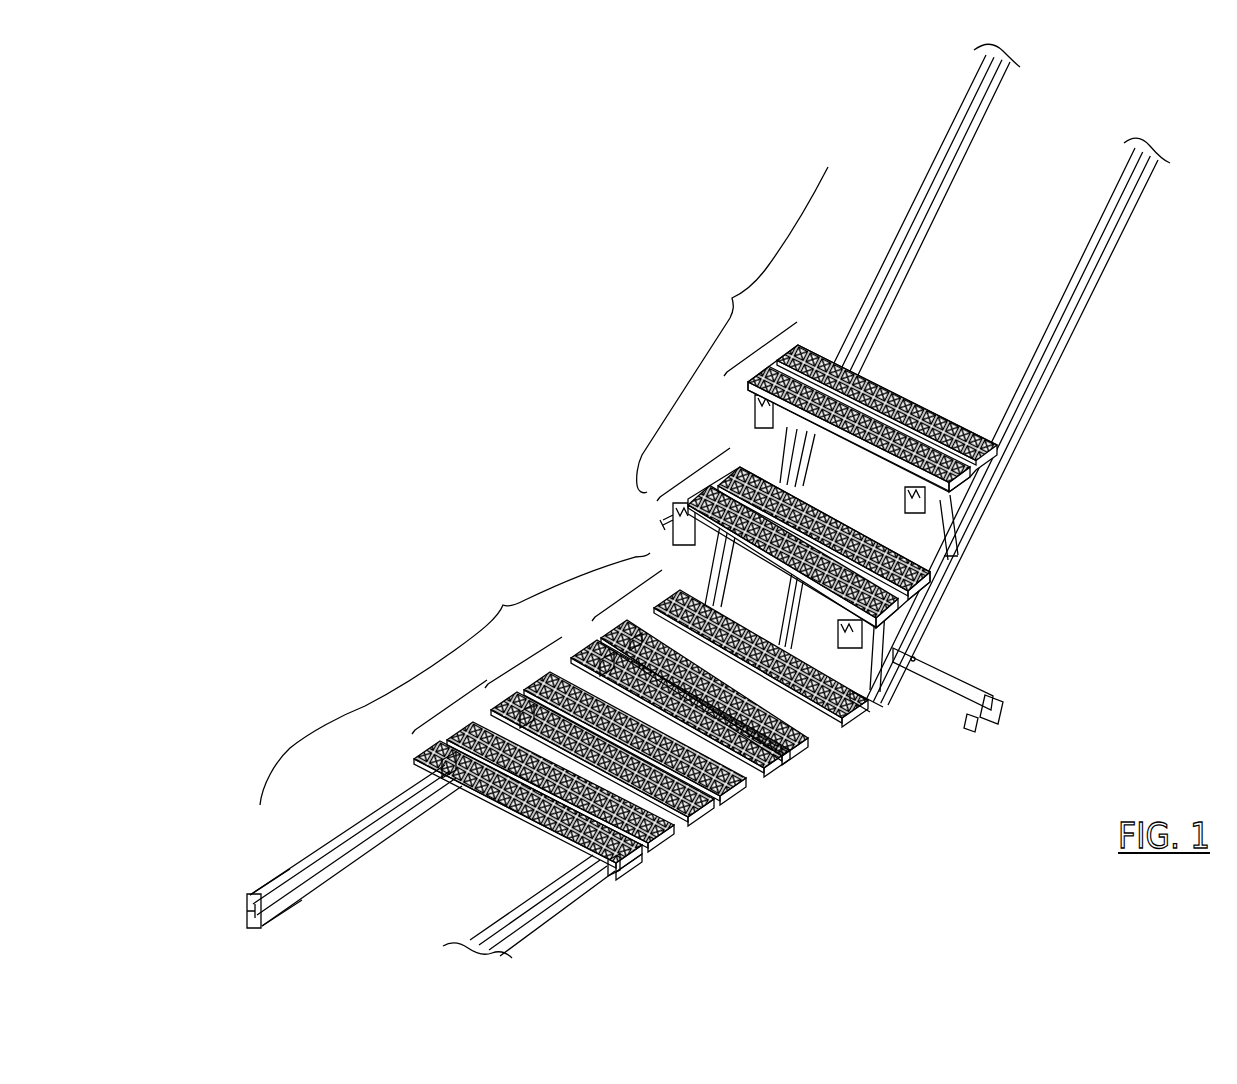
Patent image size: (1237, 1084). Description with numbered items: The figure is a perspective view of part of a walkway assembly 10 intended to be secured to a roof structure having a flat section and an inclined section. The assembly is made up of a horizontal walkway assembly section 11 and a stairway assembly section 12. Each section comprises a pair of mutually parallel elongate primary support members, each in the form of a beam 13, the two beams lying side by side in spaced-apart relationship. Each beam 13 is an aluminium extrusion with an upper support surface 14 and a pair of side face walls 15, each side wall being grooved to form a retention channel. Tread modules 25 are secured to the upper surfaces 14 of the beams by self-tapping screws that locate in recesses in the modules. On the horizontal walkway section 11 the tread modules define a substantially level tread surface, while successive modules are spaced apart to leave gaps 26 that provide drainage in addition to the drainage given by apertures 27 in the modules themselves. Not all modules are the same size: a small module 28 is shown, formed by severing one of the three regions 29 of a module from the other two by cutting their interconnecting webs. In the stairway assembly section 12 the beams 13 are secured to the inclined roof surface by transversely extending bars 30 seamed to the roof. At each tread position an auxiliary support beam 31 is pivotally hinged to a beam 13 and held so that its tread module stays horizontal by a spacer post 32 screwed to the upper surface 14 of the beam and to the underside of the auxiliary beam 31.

The walkway assembly 10 is at (523, 388).
The horizontal walkway assembly section 11 is at (503, 605).
The stairway assembly section 12 is at (731, 297).
The beam 13 is at (936, 242).
The upper support surface 14 is at (280, 886).
The side face wall 15 is at (252, 908).
The tread module 25 is at (604, 521).
The gap 26 is at (790, 752).
The aperture 27 is at (912, 408).
The small module 28 is at (786, 773).
The region 29 is at (682, 832).
The transversely extending bar 30 is at (982, 688).
The auxiliary support beam 31 is at (758, 428).
The spacer post 32 is at (794, 438).